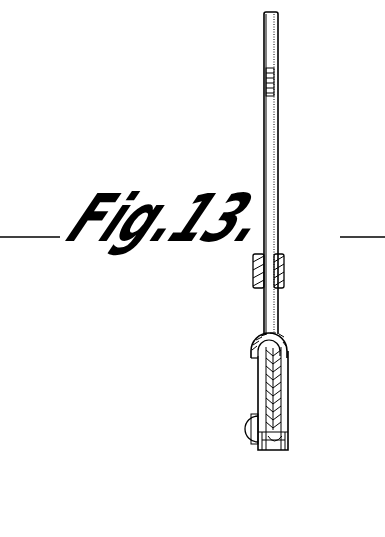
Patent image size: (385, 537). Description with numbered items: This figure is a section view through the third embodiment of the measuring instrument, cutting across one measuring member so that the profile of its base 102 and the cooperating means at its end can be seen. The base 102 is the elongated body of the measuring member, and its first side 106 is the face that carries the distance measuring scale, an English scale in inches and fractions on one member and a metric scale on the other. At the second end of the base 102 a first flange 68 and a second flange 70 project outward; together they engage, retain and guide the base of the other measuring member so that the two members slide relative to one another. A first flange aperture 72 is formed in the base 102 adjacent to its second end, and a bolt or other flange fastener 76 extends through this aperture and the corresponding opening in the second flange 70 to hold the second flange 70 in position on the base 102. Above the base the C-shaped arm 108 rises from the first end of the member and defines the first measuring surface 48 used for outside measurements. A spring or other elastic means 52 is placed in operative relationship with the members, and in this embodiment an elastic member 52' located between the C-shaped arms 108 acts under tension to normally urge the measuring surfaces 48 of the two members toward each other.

The first measuring surface 48 is at (279, 55).
The C-shaped arm 108 is at (268, 126).
The spring 52 is at (213, 282).
The elastic member 52' is at (320, 277).
The first flange 68 is at (251, 338).
The base 102 is at (258, 366).
The first side 106 is at (258, 392).
The flange fastener 76 is at (242, 421).
The second flange 70 is at (258, 440).
The first flange aperture 72 is at (270, 452).